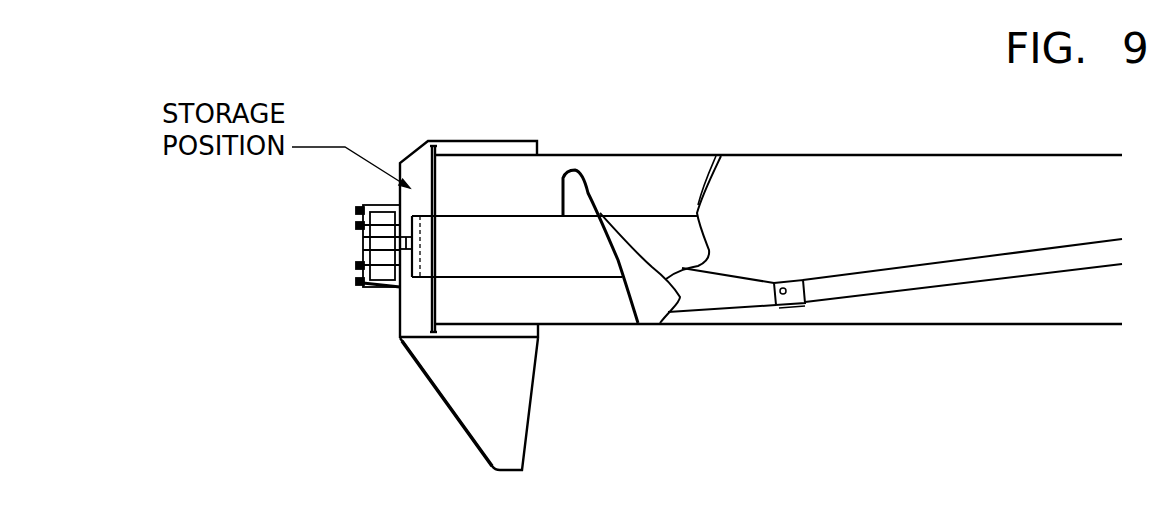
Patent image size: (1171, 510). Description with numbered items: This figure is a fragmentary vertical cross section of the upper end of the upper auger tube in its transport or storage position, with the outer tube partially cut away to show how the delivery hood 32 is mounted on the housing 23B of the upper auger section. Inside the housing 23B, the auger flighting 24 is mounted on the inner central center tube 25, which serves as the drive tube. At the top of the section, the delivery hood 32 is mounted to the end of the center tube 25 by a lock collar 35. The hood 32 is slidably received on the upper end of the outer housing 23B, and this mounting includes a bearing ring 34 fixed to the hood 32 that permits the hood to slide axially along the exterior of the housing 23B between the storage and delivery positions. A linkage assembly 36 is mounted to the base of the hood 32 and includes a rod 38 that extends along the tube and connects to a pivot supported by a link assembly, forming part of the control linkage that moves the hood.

The housing of the upper auger section 23B is at (778, 216).
The auger flighting 24 is at (630, 312).
The center tube 25 is at (492, 264).
The delivery hood 32 is at (492, 217).
The bearing ring 34 is at (540, 404).
The lock collar 35 is at (341, 309).
The linkage assembly 36 is at (838, 299).
The rod 38 is at (962, 319).